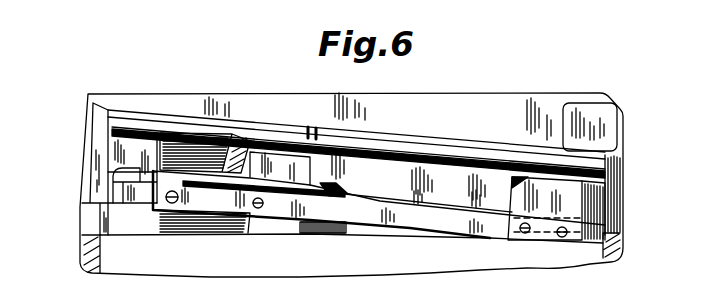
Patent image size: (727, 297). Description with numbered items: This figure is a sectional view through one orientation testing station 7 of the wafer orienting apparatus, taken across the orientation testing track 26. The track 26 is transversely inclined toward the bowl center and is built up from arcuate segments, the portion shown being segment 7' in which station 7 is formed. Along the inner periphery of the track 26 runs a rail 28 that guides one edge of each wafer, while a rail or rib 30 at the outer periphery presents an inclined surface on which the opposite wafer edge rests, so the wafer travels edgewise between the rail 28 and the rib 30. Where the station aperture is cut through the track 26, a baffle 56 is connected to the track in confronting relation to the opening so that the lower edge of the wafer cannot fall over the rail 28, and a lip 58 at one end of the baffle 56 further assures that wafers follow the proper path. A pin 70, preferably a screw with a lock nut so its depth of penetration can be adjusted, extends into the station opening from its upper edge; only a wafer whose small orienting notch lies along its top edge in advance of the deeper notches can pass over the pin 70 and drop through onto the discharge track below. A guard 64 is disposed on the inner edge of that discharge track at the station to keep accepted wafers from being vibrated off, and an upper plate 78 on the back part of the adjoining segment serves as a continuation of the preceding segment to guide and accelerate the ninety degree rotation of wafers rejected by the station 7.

The orientation testing station 7 is at (292, 130).
The arcuate segment 7' is at (379, 216).
The track 26 is at (430, 164).
The rail 28 is at (115, 174).
The rib 30 is at (478, 163).
The baffle 56 is at (306, 232).
The lip 58 is at (347, 193).
The guard 64 is at (575, 198).
The pin 70 is at (180, 130).
The upper plate 78 is at (618, 129).